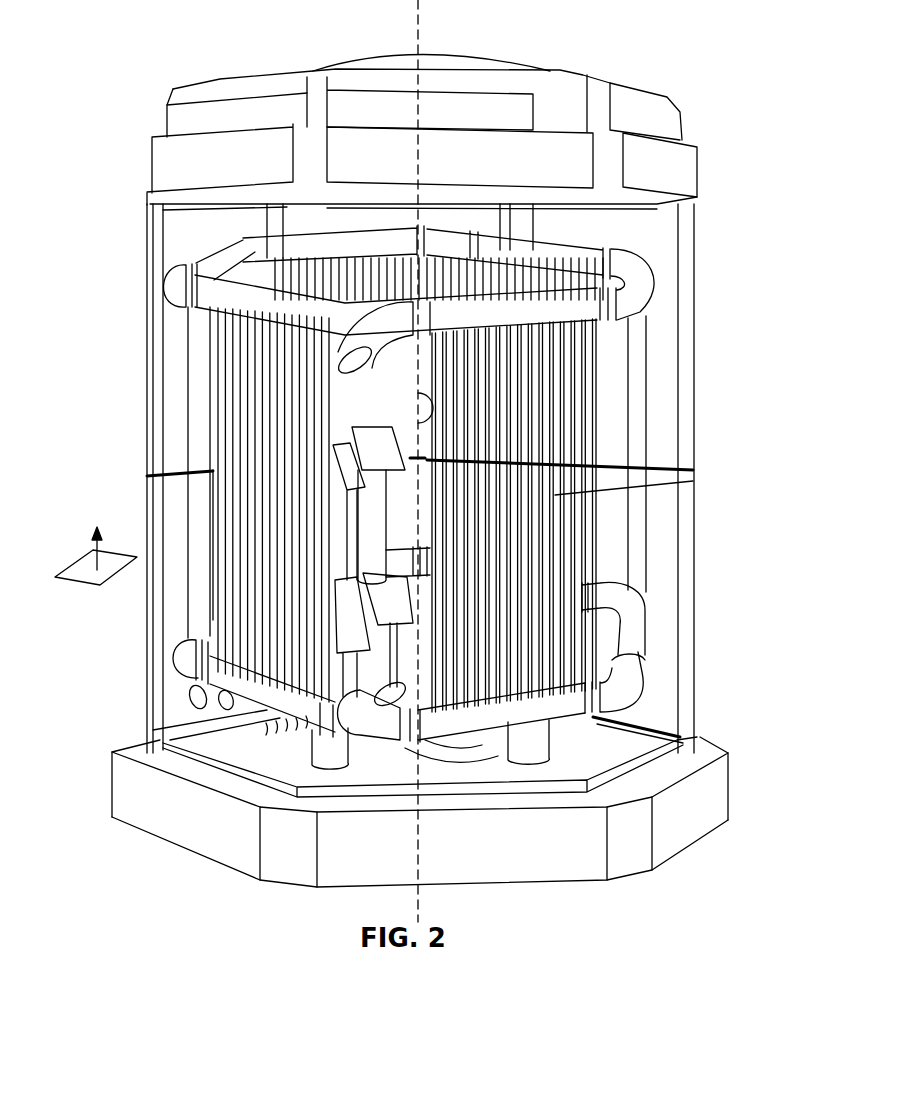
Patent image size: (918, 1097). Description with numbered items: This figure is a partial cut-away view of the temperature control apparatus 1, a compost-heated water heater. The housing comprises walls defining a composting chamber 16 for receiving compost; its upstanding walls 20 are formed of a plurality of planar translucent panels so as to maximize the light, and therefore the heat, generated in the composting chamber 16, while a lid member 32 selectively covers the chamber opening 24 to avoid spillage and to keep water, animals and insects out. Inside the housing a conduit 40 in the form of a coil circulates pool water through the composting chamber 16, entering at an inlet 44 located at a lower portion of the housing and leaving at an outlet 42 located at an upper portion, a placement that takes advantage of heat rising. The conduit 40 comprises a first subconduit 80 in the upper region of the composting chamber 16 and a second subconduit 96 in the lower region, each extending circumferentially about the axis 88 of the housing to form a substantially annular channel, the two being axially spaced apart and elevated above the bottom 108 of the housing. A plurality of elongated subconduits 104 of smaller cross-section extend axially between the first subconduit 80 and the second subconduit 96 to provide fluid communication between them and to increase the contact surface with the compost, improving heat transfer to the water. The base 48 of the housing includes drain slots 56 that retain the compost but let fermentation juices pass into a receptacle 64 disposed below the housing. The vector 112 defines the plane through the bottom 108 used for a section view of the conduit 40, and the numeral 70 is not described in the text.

The temperature control apparatus 1 is at (125, 44).
The composting chamber 16 is at (662, 232).
The upstanding walls 20 is at (692, 293).
The chamber opening 24 is at (658, 100).
The lid member 32 is at (488, 62).
The conduit 40 is at (187, 450).
The outlet 42 is at (347, 372).
The inlet 44 is at (440, 752).
The base 48 is at (640, 740).
The drain slots 56 is at (275, 757).
The receptacle 64 is at (722, 797).
The left column 70 is at (147, 237).
The first subconduit 80 is at (172, 290).
The axis 88 is at (420, 22).
The second subconduit 96 is at (182, 664).
The elongated subconduits 104 is at (220, 430).
The bottom 108 is at (78, 574).
The vector 112 is at (92, 538).